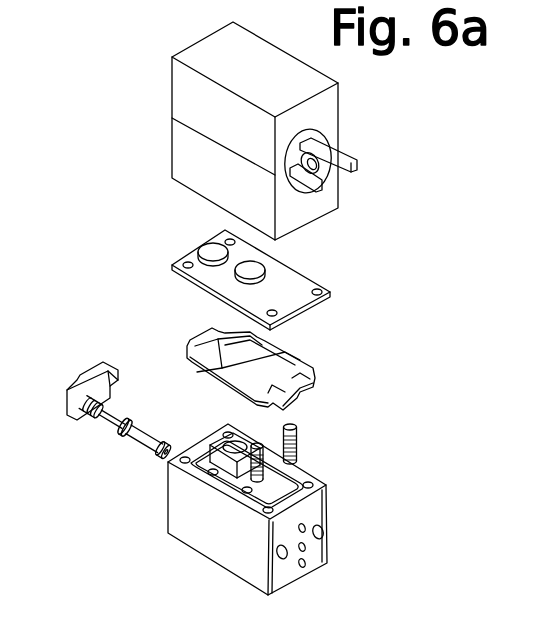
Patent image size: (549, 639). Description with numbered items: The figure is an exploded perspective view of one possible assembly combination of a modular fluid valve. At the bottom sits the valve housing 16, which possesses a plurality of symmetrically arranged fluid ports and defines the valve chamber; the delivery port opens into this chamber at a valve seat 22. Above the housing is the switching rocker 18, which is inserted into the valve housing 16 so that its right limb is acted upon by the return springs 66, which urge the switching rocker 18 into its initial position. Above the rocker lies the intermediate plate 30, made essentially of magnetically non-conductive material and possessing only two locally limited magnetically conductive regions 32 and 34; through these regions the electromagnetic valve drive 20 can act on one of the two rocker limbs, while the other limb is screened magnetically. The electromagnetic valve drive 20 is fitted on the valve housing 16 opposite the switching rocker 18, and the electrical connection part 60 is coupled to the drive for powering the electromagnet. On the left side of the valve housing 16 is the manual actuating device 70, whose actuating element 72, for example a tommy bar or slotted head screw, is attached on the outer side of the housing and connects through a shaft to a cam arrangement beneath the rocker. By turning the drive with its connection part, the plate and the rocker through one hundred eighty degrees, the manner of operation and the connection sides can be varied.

The valve housing 16 is at (205, 533).
The switching rocker 18 is at (285, 368).
The electromagnetic valve drive 20 is at (182, 143).
The valve seat 22 is at (212, 463).
The intermediate plate 30 is at (297, 280).
The magnetically conductive region 32 is at (257, 265).
The magnetically conductive region 34 is at (212, 250).
The electrical connection part 60 is at (327, 110).
The return springs 66 is at (290, 460).
The manual actuating device 70 is at (123, 442).
The actuating element 72 is at (93, 372).